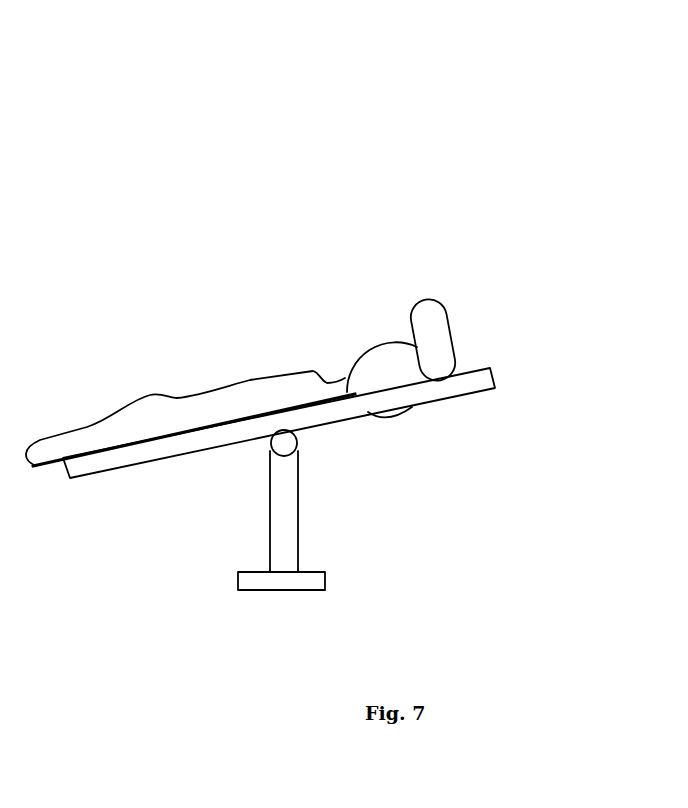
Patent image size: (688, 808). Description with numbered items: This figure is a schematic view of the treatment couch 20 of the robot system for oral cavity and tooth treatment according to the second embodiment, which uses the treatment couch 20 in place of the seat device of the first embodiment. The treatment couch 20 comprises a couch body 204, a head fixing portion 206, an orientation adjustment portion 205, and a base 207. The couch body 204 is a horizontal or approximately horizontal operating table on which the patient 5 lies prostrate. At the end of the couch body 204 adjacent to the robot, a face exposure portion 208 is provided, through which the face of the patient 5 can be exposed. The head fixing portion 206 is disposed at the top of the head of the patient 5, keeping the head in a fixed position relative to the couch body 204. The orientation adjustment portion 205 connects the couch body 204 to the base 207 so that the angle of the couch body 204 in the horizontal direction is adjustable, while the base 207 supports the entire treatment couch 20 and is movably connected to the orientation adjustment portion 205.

The treatment couch 20 is at (301, 174).
The patient 5 is at (223, 412).
The couch body 204 is at (150, 470).
The orientation adjustment portion 205 is at (288, 445).
The head fixing portion 206 is at (450, 333).
The base 207 is at (288, 580).
The face exposure portion 208 is at (403, 408).